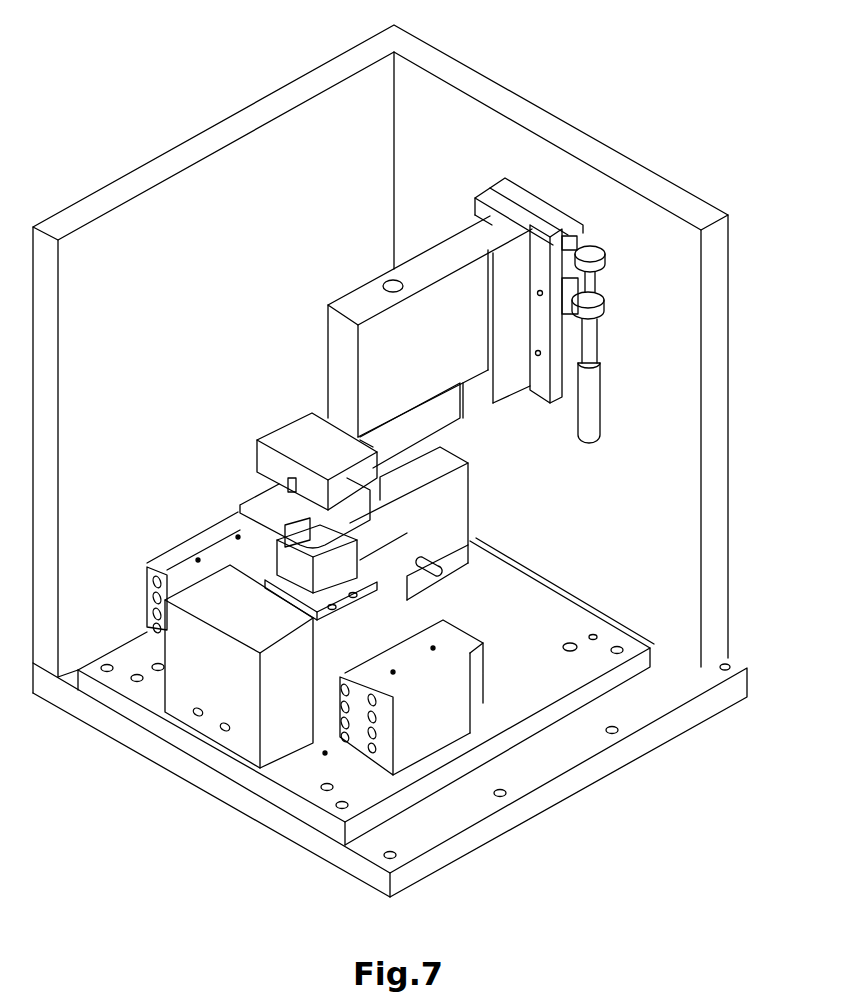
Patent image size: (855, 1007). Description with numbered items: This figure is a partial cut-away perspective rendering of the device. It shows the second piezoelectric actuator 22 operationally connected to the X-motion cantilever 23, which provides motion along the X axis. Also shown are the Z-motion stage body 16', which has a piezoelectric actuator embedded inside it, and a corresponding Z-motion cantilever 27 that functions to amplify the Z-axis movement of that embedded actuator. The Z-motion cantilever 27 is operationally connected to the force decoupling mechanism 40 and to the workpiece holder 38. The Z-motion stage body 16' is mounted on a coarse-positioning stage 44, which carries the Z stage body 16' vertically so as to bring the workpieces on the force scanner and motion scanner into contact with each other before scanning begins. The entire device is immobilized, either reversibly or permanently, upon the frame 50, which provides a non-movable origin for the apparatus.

The Z-motion stage body 16' is at (430, 326).
The second piezoelectric actuator 22 is at (420, 531).
The X-motion cantilever 23 is at (407, 581).
The Z-motion cantilever 27 is at (440, 432).
The workpiece holder 38 is at (297, 528).
The force decoupling mechanism 40 is at (297, 500).
The coarse-positioning stage 44 is at (522, 185).
The frame 50 is at (729, 534).